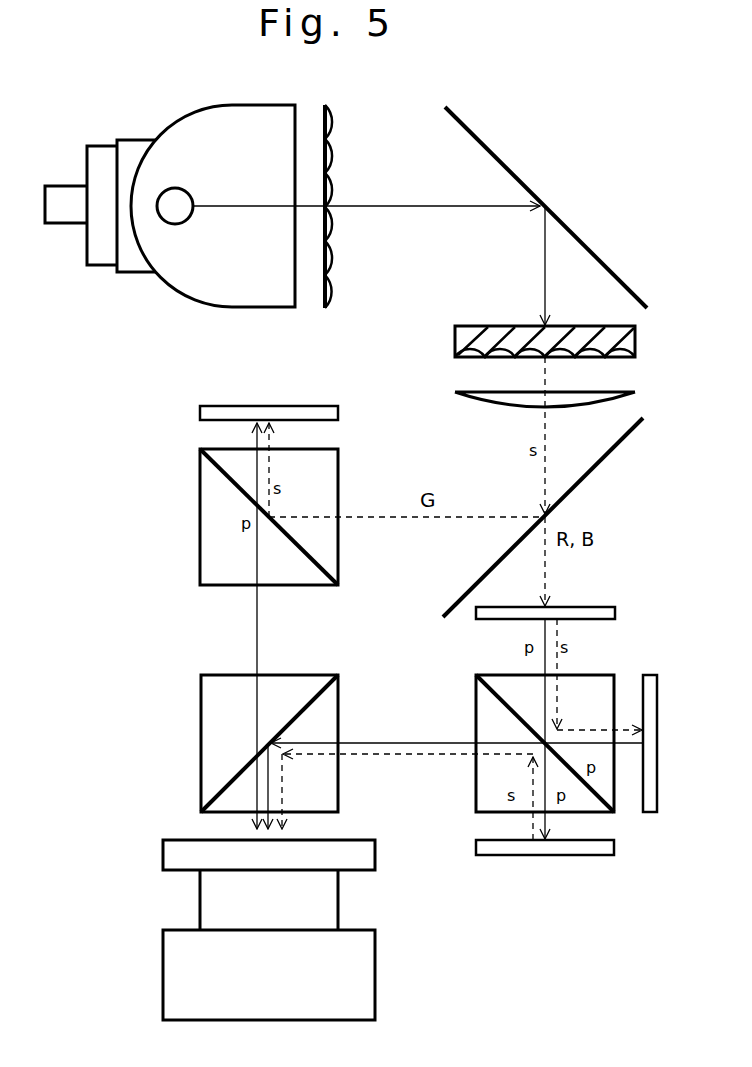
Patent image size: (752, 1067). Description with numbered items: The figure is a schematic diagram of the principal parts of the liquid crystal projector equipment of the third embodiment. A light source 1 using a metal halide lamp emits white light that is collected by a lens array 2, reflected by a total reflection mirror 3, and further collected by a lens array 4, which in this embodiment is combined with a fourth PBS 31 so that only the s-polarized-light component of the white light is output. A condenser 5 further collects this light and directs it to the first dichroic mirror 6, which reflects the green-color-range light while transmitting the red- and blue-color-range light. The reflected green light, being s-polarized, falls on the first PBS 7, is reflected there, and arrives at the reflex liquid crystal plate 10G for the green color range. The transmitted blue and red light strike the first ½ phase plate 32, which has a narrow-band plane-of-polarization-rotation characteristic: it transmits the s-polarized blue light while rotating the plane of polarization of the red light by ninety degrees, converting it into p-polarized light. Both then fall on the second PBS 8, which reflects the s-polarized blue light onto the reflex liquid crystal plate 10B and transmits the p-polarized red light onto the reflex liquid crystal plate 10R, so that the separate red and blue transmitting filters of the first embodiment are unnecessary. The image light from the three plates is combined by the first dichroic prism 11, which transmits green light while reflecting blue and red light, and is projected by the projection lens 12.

The light source 1 is at (207, 125).
The lens array 2 is at (332, 118).
The total reflection mirror 3 is at (488, 148).
The fourth PBS 31 is at (455, 338).
The lens array 4 is at (455, 355).
The condenser 5 is at (480, 400).
The first dichroic mirror 6 is at (605, 456).
The first PBS 7 is at (215, 485).
The second PBS 8 is at (490, 698).
The reflex liquid crystal plate for green color range 10G is at (218, 412).
The reflex liquid crystal plate for blue color range 10B is at (650, 690).
The reflex liquid crystal plate for red color range 10R is at (590, 848).
The first ½ phase plate 32 is at (590, 612).
The first dichroic prism 11 is at (218, 700).
The projection lens 12 is at (185, 950).